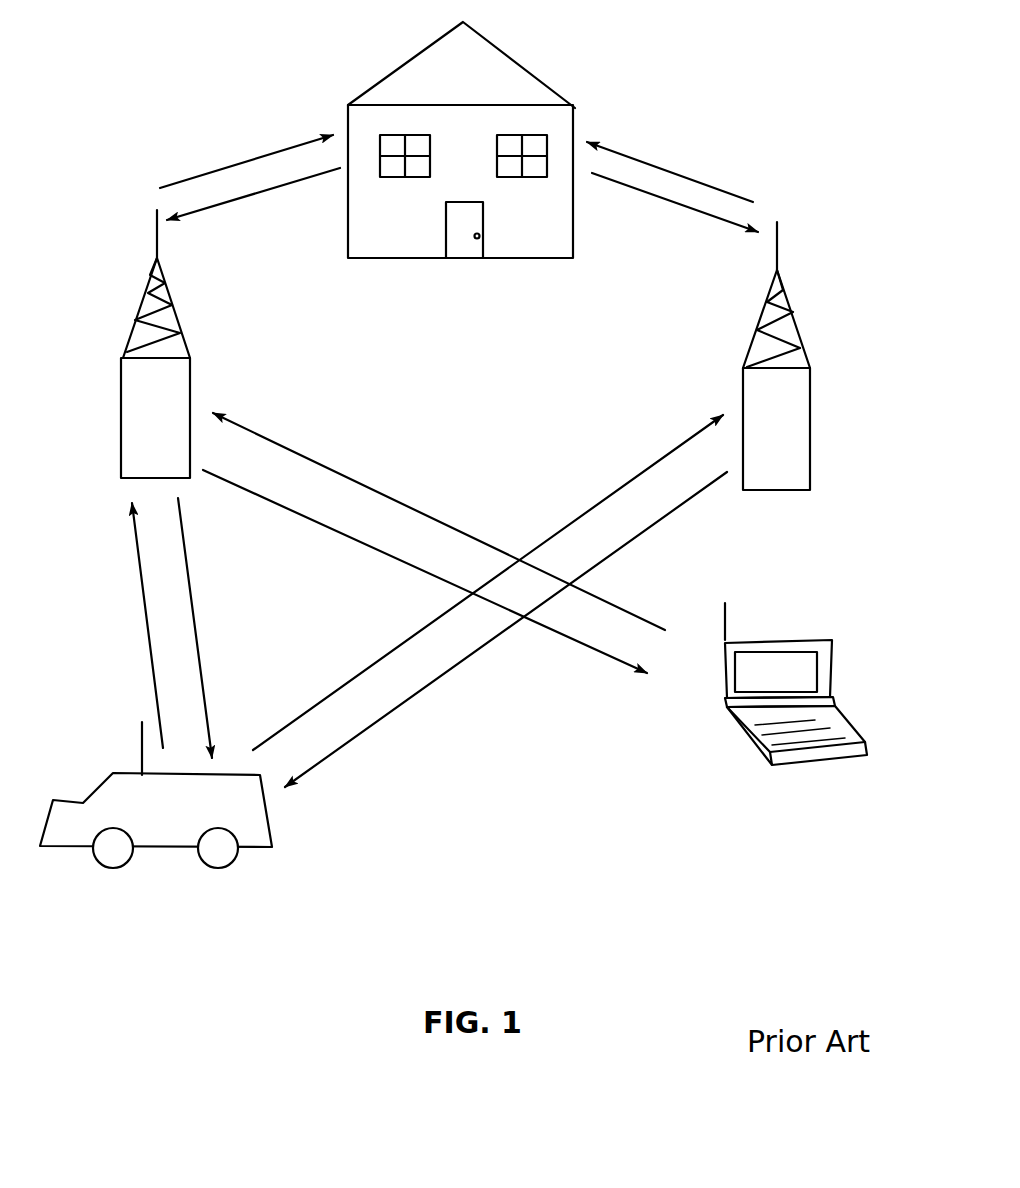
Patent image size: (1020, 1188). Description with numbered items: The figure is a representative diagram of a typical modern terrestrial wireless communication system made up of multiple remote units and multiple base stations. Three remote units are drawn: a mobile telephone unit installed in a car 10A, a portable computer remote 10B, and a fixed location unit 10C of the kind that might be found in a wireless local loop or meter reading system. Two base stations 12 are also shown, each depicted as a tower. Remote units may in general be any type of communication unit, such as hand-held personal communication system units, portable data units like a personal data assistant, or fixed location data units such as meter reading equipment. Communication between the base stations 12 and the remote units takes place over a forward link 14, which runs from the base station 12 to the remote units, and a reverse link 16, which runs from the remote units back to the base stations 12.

The mobile telephone unit installed in a car 10A is at (272, 830).
The portable computer remote 10B is at (778, 638).
The fixed location unit 10C is at (505, 52).
The base station 12 is at (177, 310).
The forward link 14 is at (257, 158).
The reverse link 16 is at (263, 193).